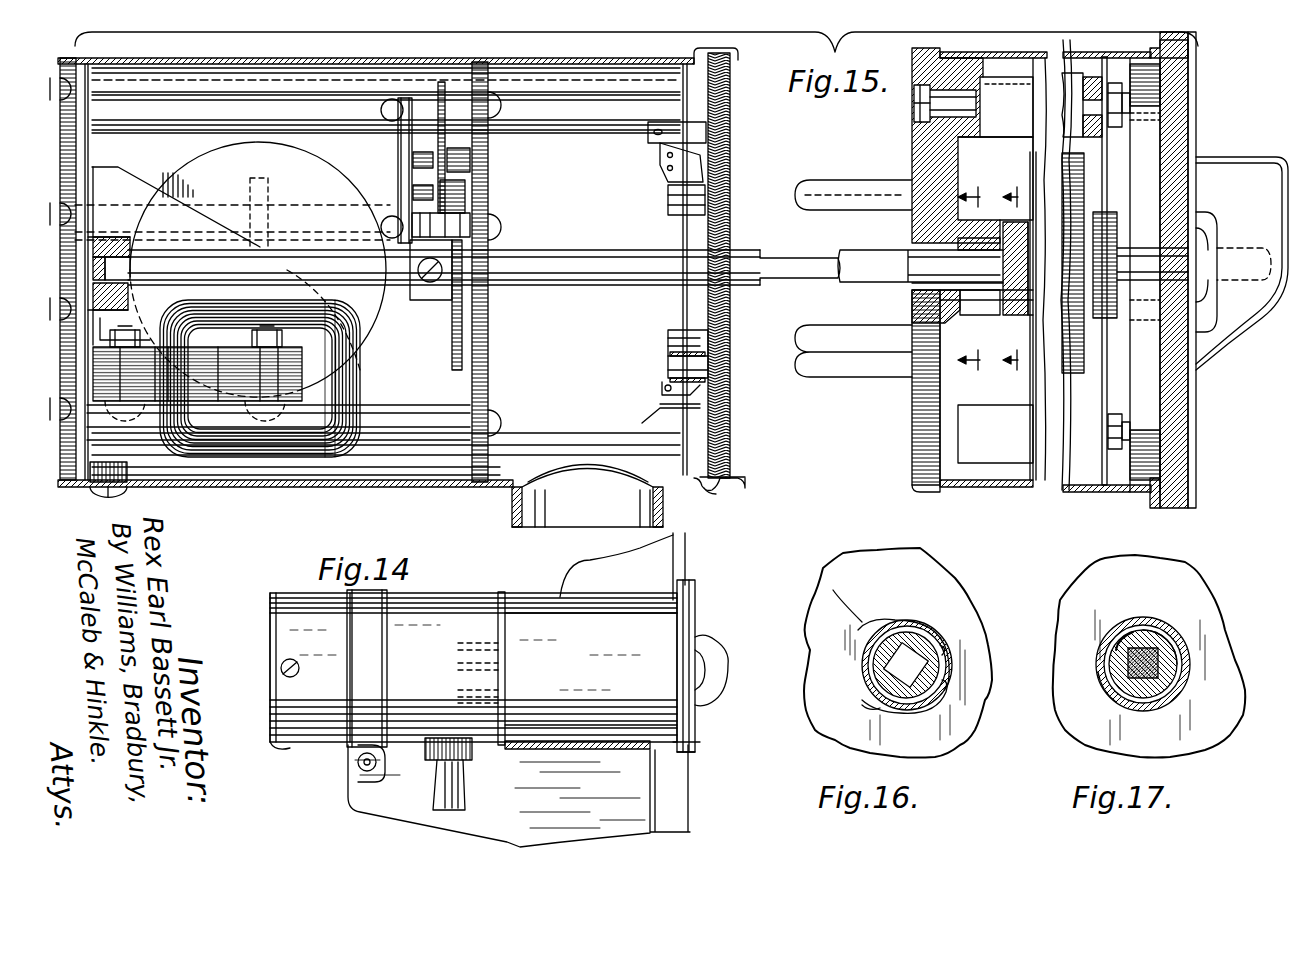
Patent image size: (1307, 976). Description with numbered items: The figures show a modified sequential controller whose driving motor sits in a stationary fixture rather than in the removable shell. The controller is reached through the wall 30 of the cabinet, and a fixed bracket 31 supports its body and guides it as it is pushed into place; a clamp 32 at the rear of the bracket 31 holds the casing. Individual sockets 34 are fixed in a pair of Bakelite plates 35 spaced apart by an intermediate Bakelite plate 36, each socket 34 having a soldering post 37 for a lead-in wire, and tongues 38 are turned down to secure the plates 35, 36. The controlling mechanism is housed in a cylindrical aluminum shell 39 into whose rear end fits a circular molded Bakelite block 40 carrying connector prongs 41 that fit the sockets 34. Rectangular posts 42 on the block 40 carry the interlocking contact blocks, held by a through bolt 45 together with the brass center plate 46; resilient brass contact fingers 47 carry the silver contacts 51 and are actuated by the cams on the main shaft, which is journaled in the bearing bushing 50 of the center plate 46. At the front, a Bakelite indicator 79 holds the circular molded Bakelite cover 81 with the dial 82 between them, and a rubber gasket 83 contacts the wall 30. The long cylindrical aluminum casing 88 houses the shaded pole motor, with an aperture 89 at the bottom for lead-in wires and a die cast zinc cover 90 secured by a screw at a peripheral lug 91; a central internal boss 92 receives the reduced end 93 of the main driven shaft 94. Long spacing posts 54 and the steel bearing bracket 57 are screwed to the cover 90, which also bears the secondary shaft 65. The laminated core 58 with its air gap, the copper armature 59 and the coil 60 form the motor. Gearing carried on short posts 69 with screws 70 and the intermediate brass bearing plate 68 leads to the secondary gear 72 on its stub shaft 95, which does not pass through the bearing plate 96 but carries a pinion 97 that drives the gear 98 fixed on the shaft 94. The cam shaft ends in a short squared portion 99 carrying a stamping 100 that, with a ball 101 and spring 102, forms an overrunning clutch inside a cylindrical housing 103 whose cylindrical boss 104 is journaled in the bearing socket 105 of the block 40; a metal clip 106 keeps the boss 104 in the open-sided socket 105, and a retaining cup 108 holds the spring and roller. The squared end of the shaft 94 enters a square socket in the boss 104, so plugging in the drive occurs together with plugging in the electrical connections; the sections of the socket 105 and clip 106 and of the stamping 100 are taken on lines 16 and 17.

In FIG. 15, the section line 16— 16 is at (971, 281).
In FIG. 15, the section line 17— 17 is at (1015, 281).
In FIG. 14, the wall 30 is at (690, 815).
In FIG. 14, the fixed bracket 31 is at (445, 815).
In FIG. 14, the clamp 32 is at (390, 612).
In FIG. 15, the individual sockets 34 is at (662, 345).
In FIG. 15, the Bakelite plates 35 is at (712, 492).
In FIG. 15, the intermediate Bakelite plate 36 is at (728, 338).
In FIG. 15, the soldering post 37 is at (655, 145).
In FIG. 15, the tongues 38 is at (742, 484).
In FIG. 15, the cylindrical aluminum shell 39 is at (1092, 483).
In FIG. 14, the cylindrical aluminum shell 39 is at (591, 669).
In FIG. 15, the circular molded Bakelite block 40 is at (912, 155).
In FIG. 16, the circular molded Bakelite block 40 is at (874, 556).
In FIG. 17, the circular molded Bakelite block 40 is at (1220, 678).
In FIG. 15, the connector prongs 41 is at (858, 352).
In FIG. 14, the connector prongs 41 is at (450, 645).
In FIG. 15, the rectangular posts 42 is at (1000, 78).
In FIG. 15, the through bolt 45 is at (914, 116).
In FIG. 15, the brass center plate 46 is at (1102, 380).
In FIG. 15, the resilient brass contact finger 47 is at (1030, 395).
In FIG. 15, the bearing bushing 50 is at (1200, 302).
In FIG. 15, the silver contacts 51 is at (1034, 132).
In FIG. 15, the long spacing posts 54 is at (283, 97).
In FIG. 15, the steel bearing bracket 57 is at (178, 205).
In FIG. 15, the laminated core 58 is at (236, 403).
In FIG. 15, the copper armature 59 is at (372, 320).
In FIG. 15, the coil 60 is at (360, 376).
In FIG. 15, the secondary shaft 65 is at (400, 195).
In FIG. 15, the intermediate brass bearing plate 68 is at (404, 128).
In FIG. 15, the short posts 69 is at (404, 110).
In FIG. 15, the screws 70 is at (500, 222).
In FIG. 15, the secondary gear 72 is at (445, 96).
In FIG. 15, the Bakelite indicator 79 is at (1240, 157).
In FIG. 14, the Bakelite indicator 79 is at (712, 648).
In FIG. 15, the circular molded Bakelite cover 81 is at (1190, 86).
In FIG. 15, the dial 82 is at (1197, 112).
In FIG. 14, the dial 82 is at (695, 600).
In FIG. 15, the rubber gasket 83 is at (1175, 50).
In FIG. 14, the rubber gasket 83 is at (693, 750).
In FIG. 15, the cylindrical aluminum casing 88 is at (250, 488).
In FIG. 14, the cylindrical aluminum casing 88 is at (310, 597).
In FIG. 15, the aperture 89 is at (515, 524).
In FIG. 14, the aperture 89 is at (468, 765).
In FIG. 15, the die cast zinc cover 90 is at (77, 150).
In FIG. 14, the die cast zinc cover 90 is at (270, 652).
In FIG. 15, the peripheral lug 91 is at (128, 478).
In FIG. 15, the central internal boss 92 is at (118, 236).
In FIG. 15, the reduced end 93 is at (145, 258).
In FIG. 15, the main driven shaft 94 is at (527, 252).
In FIG. 15, the stub shaft 95 is at (402, 138).
In FIG. 15, the bearing plate 96 is at (488, 372).
In FIG. 15, the pinion 97 is at (472, 150).
In FIG. 15, the gear 98 is at (462, 320).
In FIG. 15, the short squared portion 99 is at (910, 248).
In FIG. 17, the short squared portion 99 is at (1135, 680).
In FIG. 15, the stamping 100 is at (1162, 310).
In FIG. 17, the stamping 100 is at (1180, 658).
In FIG. 15, the ball 101 is at (1018, 268).
In FIG. 17, the ball 101 is at (1178, 638).
In FIG. 17, the spring 102 is at (1102, 632).
In FIG. 15, the cylindrical housing 103 is at (1003, 212).
In FIG. 17, the cylindrical housing 103 is at (1150, 622).
In FIG. 15, the cylindrical boss 104 is at (912, 298).
In FIG. 16, the cylindrical boss 104 is at (937, 635).
In FIG. 15, the bearing socket 105 is at (912, 318).
In FIG. 16, the bearing socket 105 is at (916, 625).
In FIG. 15, the metal clip 106 is at (970, 316).
In FIG. 16, the metal clip 106 is at (845, 590).
In FIG. 15, the retaining cup 108 is at (1020, 318).
In FIG. 17, the retaining cup 108 is at (1113, 702).